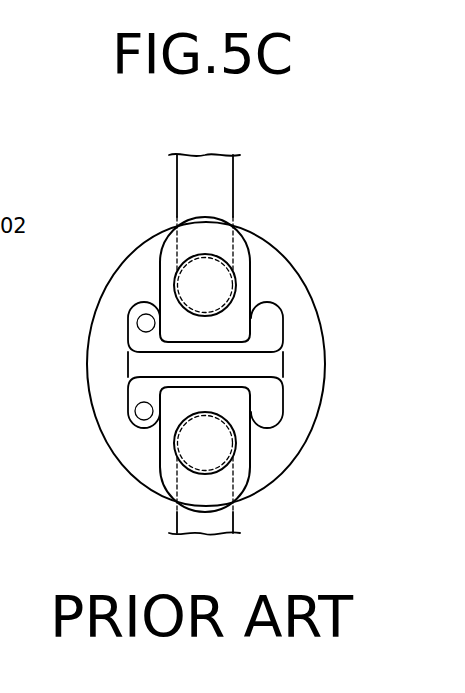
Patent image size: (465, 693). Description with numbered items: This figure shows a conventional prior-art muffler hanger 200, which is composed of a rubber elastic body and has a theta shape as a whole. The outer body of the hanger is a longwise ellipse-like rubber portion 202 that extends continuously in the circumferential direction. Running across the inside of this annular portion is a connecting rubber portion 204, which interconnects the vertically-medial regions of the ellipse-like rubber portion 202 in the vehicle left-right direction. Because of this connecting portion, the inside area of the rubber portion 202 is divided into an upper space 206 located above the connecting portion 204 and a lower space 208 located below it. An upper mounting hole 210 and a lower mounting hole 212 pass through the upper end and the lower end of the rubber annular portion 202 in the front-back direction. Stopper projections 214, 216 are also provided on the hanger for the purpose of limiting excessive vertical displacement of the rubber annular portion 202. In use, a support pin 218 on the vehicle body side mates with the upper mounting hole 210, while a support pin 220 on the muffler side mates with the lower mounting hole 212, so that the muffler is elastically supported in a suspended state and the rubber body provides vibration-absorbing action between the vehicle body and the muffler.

The muffler hanger 200 is at (290, 206).
The longwise ellipse-like rubber portion 202 is at (298, 298).
The connecting rubber portion 204 is at (253, 368).
The upper space 206 is at (137, 336).
The lower space 208 is at (146, 420).
The upper mounting hole 210 is at (176, 267).
The lower mounting hole 212 is at (170, 448).
The stopper projection 214 is at (208, 333).
The stopper projection 216 is at (197, 395).
The support pin 218 is at (220, 165).
The support pin 220 is at (220, 522).